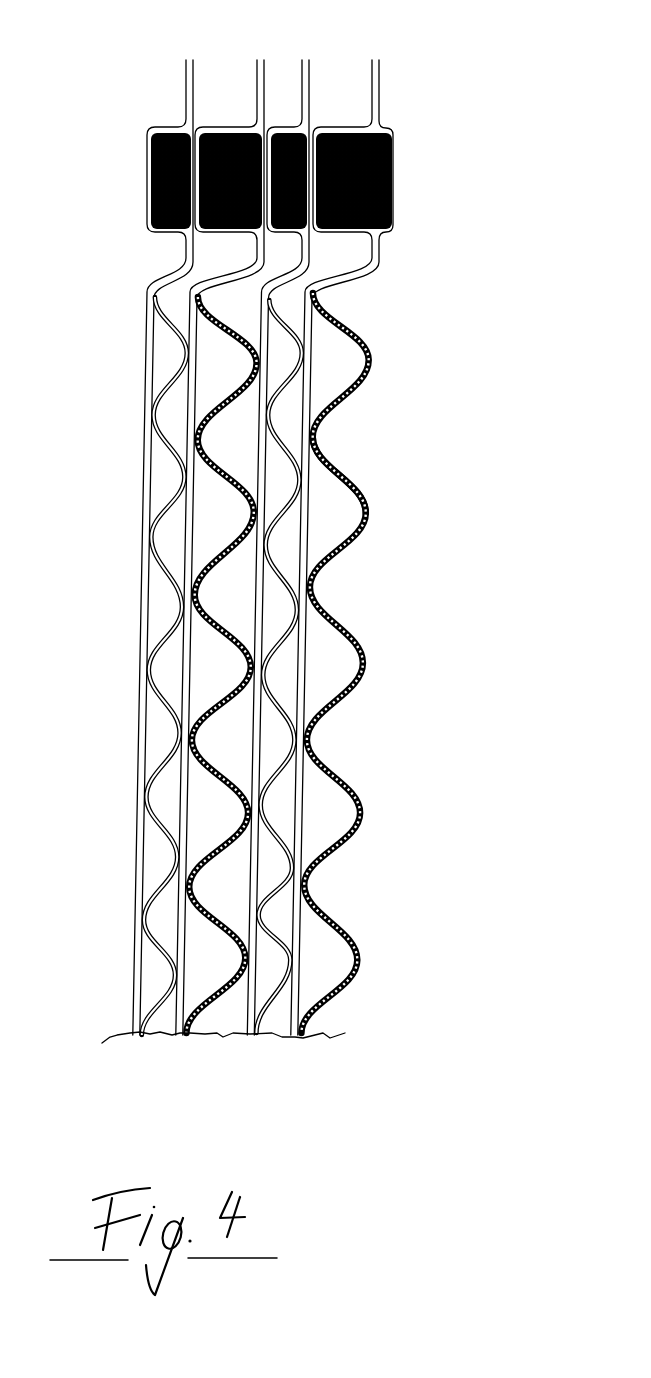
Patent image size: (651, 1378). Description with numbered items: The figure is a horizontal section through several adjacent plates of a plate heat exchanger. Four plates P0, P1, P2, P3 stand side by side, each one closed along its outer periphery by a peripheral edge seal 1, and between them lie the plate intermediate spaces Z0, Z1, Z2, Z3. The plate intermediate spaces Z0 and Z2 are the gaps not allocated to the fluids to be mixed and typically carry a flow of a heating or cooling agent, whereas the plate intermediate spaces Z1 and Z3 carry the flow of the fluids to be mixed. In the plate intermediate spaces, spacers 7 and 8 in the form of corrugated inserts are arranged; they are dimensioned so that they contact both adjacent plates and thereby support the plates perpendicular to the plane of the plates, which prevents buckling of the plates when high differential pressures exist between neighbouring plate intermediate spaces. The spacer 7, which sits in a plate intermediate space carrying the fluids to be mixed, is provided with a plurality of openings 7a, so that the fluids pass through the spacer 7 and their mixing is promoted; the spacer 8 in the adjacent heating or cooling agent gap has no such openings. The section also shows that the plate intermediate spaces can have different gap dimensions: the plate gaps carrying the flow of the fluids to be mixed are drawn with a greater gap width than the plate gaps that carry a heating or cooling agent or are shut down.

The peripheral edge seal 1 is at (316, 517).
The spacer 7 is at (382, 663).
The openings 7a is at (360, 488).
The spacer 8 is at (356, 666).
The plate P0 is at (163, 517).
The plate P1 is at (227, 517).
The plate P2 is at (287, 517).
The plate P3 is at (346, 517).
The plate intermediate space Z0 is at (162, 363).
The plate intermediate space Z1 is at (213, 513).
The plate intermediate space Z2 is at (278, 662).
The plate intermediate space Z3 is at (332, 812).